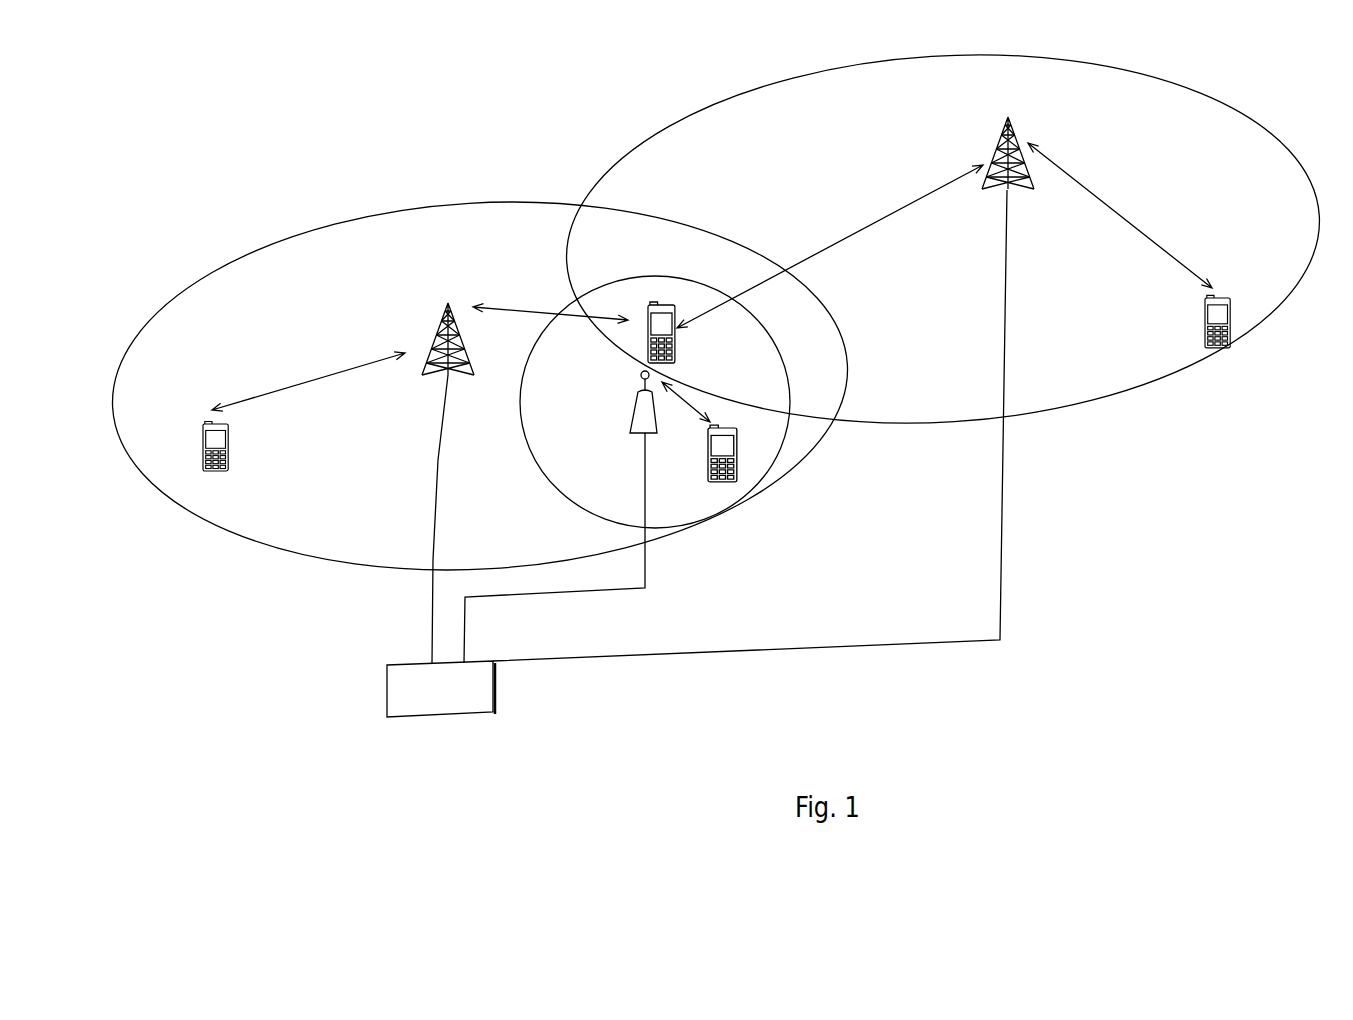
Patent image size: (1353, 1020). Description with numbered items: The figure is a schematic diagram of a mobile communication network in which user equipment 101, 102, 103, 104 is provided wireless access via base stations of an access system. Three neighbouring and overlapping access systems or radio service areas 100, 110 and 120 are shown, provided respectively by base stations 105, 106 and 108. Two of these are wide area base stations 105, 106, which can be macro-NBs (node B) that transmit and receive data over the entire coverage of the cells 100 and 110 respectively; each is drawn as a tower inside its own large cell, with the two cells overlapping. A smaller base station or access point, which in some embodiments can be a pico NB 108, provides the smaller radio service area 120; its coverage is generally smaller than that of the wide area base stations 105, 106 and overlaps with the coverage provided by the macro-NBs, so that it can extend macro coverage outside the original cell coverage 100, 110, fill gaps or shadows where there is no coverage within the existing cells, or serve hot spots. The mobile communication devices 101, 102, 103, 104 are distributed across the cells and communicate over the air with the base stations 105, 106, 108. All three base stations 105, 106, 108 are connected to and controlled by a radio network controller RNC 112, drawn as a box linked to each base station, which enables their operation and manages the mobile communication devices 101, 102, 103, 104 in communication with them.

The radio service area 100 is at (186, 238).
The radio service area 110 is at (632, 131).
The radio service area 120 is at (803, 333).
The wide area base station 105 is at (430, 347).
The wide area base station 106 is at (992, 158).
The smaller base station 108 is at (628, 427).
The user equipment 101 is at (205, 465).
The user equipment 102 is at (1207, 347).
The user equipment 103 is at (737, 478).
The user equipment 104 is at (648, 304).
The radio network controller 112 is at (383, 682).